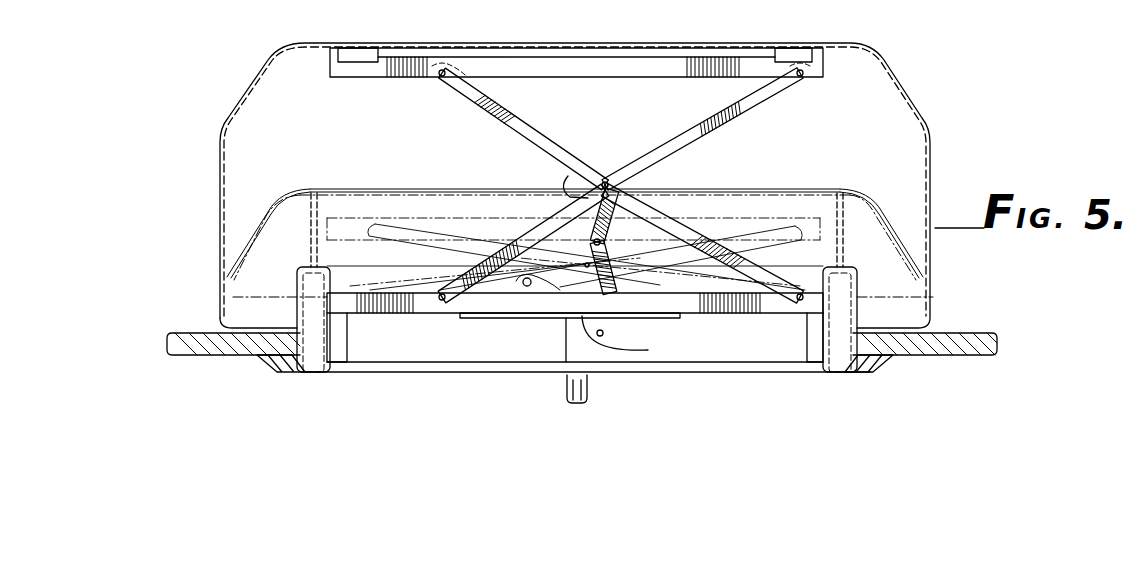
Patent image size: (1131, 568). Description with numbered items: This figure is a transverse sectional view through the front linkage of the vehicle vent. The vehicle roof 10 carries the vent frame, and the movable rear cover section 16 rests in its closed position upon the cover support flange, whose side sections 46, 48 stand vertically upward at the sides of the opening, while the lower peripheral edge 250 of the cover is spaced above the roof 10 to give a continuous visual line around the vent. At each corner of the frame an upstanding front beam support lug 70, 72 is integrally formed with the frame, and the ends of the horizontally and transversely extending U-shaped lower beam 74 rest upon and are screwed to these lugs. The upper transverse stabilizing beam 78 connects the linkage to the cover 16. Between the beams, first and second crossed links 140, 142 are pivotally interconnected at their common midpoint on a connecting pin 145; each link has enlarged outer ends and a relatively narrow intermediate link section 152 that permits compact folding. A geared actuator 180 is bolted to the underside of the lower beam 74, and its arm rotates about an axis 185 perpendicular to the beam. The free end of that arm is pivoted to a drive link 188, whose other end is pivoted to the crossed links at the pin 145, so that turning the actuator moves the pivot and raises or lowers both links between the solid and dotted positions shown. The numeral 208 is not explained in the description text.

The vehicle roof 10 is at (985, 336).
The movable rear cover section 16 is at (592, 46).
The side section of cover support flange 46 is at (310, 248).
The side section of cover support flange 48 is at (843, 255).
The front beam support lug 70 is at (343, 346).
The front beam support lug 72 is at (806, 334).
The lower beam 74 is at (499, 315).
The transverse stabilizing beam 78 is at (570, 70).
The first crossed link 140 is at (565, 134).
The second crossed link 142 is at (725, 125).
The connecting pin 145 is at (642, 175).
The intermediate link section 152 is at (563, 290).
The geared actuator 180 is at (600, 394).
The actuator arm axis 185 is at (603, 336).
The drive link 188 is at (573, 192).
The headrest 208 is at (850, 2).
The lower peripheral edge 250 is at (220, 160).